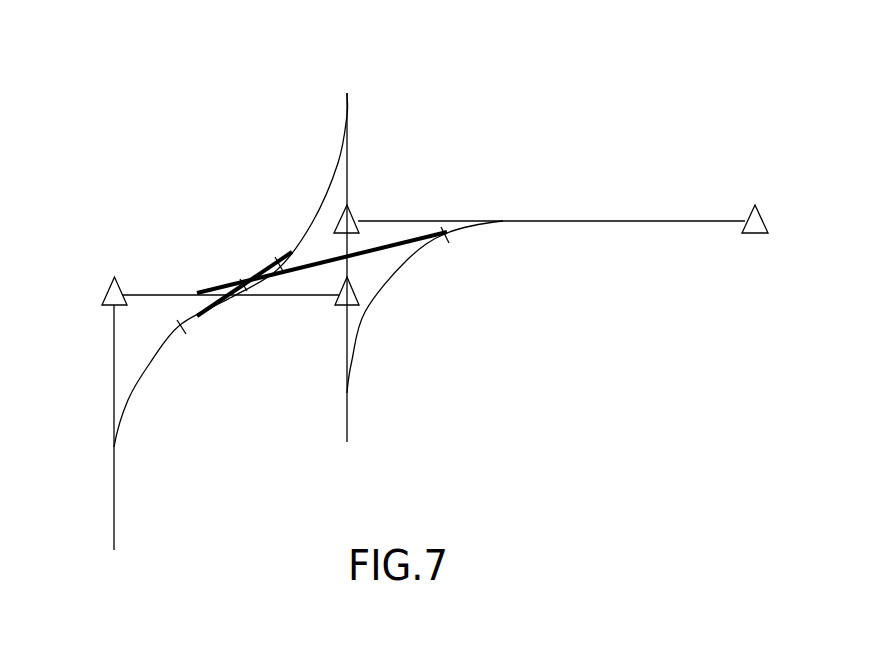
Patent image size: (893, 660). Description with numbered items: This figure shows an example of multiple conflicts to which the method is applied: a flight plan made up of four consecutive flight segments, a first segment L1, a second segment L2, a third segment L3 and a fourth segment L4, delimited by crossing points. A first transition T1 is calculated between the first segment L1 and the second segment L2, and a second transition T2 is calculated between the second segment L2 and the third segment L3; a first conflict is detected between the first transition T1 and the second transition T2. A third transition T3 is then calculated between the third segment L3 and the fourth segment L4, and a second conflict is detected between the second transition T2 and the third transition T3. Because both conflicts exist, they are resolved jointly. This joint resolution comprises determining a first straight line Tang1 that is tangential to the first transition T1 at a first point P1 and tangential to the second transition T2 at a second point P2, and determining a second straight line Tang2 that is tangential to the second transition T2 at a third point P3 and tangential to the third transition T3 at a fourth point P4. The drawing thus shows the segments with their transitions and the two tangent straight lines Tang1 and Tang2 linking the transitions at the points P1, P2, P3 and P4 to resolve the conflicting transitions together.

The first segment L1 is at (111, 498).
The second segment L2 is at (302, 299).
The third segment L3 is at (353, 268).
The fourth segment L4 is at (568, 219).
The first transition T1 is at (151, 366).
The second transition T2 is at (314, 225).
The third transition T3 is at (404, 277).
The first straight line Tang1 is at (229, 304).
The second straight line Tang2 is at (392, 243).
The first point P1 is at (192, 344).
The second point P2 is at (269, 250).
The third point P3 is at (230, 270).
The fourth point P4 is at (454, 253).